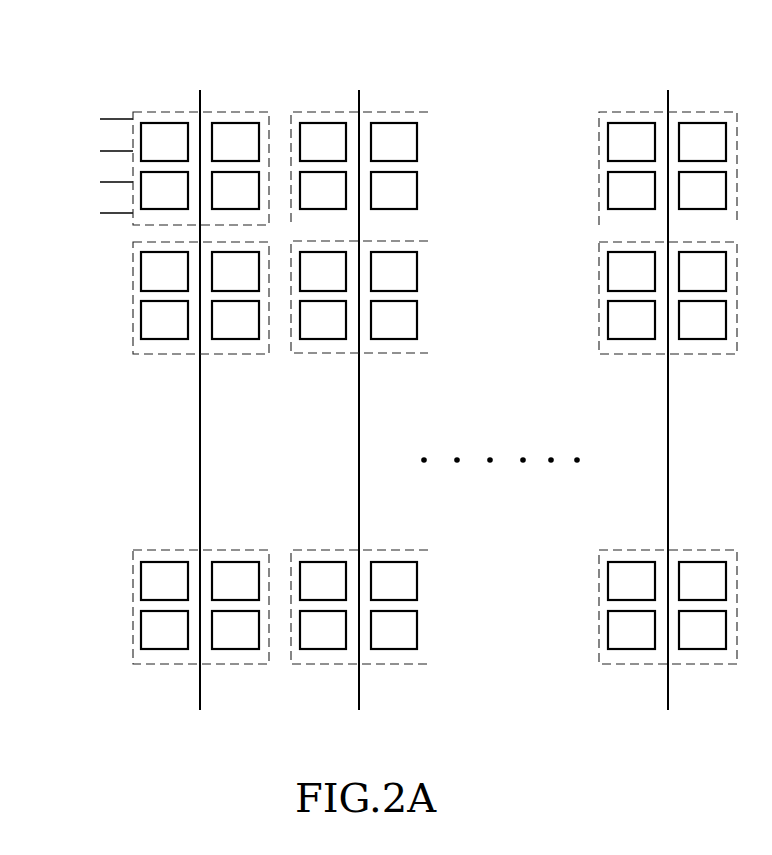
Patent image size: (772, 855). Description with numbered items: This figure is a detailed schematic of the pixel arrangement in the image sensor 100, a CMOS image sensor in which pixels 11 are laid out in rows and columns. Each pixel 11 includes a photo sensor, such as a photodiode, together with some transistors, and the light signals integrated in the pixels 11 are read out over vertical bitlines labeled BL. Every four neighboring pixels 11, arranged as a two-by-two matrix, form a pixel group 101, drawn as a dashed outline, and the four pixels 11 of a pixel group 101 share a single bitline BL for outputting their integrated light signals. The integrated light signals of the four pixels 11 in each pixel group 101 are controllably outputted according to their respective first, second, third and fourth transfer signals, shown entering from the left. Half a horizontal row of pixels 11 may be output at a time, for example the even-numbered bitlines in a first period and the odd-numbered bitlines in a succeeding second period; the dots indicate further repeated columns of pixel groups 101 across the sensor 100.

The image sensor 100 is at (52, 46).
The pixel 11 is at (167, 135).
The pixel group 101 is at (255, 109).